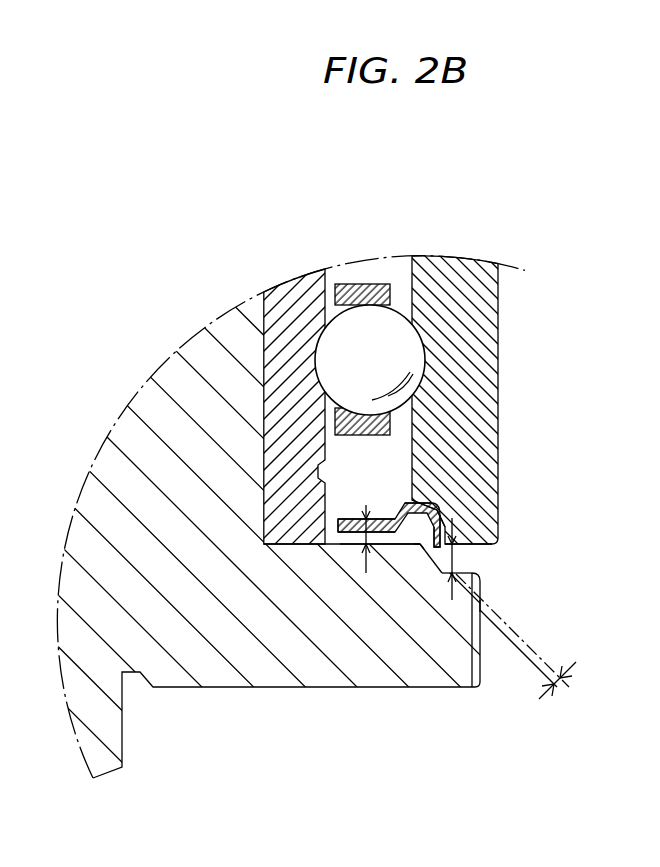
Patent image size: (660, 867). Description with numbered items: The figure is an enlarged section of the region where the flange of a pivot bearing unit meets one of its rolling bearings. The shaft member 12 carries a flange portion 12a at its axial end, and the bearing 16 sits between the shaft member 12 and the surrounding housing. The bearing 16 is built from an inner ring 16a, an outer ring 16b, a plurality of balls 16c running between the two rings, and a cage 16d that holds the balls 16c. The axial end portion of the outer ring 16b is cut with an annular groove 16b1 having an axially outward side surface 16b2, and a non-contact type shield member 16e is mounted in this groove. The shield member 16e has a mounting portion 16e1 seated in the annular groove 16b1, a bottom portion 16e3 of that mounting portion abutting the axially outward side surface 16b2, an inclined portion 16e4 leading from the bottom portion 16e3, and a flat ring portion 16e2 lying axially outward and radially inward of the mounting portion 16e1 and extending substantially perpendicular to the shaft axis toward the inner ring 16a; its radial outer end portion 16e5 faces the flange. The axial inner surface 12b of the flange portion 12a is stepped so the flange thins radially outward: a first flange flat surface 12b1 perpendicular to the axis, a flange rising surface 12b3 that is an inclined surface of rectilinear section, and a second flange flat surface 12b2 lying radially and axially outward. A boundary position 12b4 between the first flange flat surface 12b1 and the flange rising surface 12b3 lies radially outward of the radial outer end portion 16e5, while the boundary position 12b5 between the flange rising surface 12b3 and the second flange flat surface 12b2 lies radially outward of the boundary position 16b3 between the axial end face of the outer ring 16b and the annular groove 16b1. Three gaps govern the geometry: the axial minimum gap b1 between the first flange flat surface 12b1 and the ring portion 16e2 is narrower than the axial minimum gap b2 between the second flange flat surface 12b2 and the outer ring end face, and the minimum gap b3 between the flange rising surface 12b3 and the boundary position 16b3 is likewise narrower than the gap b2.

The shaft member 12 is at (143, 430).
The flange portion 12a is at (197, 660).
The axial inner surface 12b is at (331, 539).
The first flange flat surface 12b1 is at (368, 547).
The second flange flat surface 12b2 is at (470, 575).
The flange rising surface 12b3 is at (441, 565).
The shoulder corner 12b4 is at (396, 548).
The boundary position 12b5 is at (452, 578).
The bearing 16 is at (366, 491).
The inner ring 16a is at (277, 360).
The outer ring 16b is at (477, 393).
The annular groove 16b1 is at (449, 516).
The axially outward side surface 16b2 is at (445, 508).
The boundary position 16b3 is at (442, 548).
The balls 16c is at (403, 333).
The cage 16d is at (392, 287).
The shield member 16e is at (440, 501).
The mounting portion 16e1 is at (442, 531).
The ring portion 16e2 is at (337, 520).
The bottom portion 16e3 is at (415, 501).
The inclined portion 16e4 is at (368, 515).
The radial outer end portion 16e5 is at (392, 548).
The axial minimum gap b1 is at (346, 548).
The axial minimum gap b2 is at (455, 556).
The minimum gap b3 is at (565, 687).